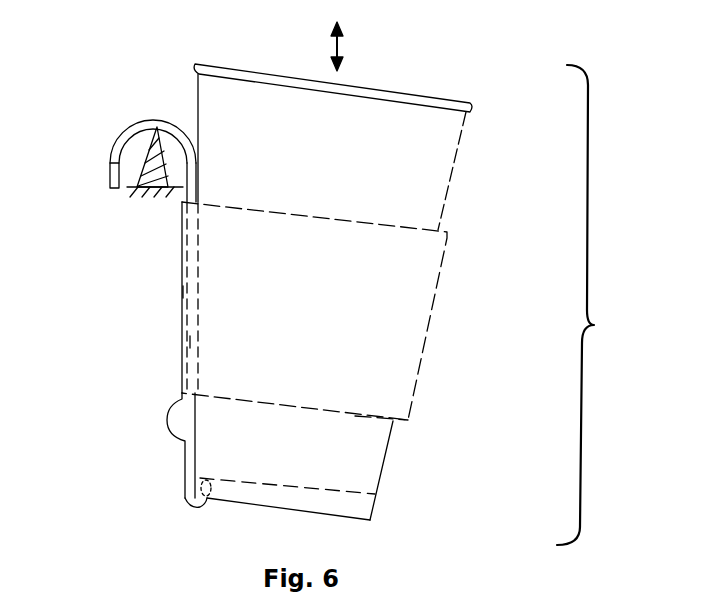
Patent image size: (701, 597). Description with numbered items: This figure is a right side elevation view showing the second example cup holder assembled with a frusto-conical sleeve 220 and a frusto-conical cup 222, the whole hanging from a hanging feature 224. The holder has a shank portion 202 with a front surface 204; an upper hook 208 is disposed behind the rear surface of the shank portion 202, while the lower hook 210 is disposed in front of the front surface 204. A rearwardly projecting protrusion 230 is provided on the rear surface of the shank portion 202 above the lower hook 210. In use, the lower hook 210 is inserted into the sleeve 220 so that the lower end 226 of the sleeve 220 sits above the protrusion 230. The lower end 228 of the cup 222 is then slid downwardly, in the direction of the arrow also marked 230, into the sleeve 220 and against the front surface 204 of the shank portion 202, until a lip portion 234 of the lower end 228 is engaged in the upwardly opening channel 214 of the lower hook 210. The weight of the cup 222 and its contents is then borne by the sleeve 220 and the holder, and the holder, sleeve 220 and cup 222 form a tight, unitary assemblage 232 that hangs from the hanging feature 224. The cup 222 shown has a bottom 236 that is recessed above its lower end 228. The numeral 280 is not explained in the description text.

The shank portion 202 is at (186, 342).
The front surface 204 is at (183, 292).
The upper hook 208 is at (130, 130).
The lower hook 210 is at (197, 512).
The upwardly opening channel 214 is at (187, 501).
The frusto-conical sleeve 220 is at (418, 318).
The frusto-conical cup 222 is at (445, 157).
The hanging feature 224 is at (143, 190).
The lower end of the sleeve 226 is at (355, 417).
The lower end of the cup 228 is at (343, 521).
The rearwardly projecting protrusion 230 is at (343, 52).
The unitary assemblage 232 is at (597, 325).
The lip portion 234 is at (251, 493).
The bottom 236 is at (385, 486).
The lower leg 280 is at (185, 462).